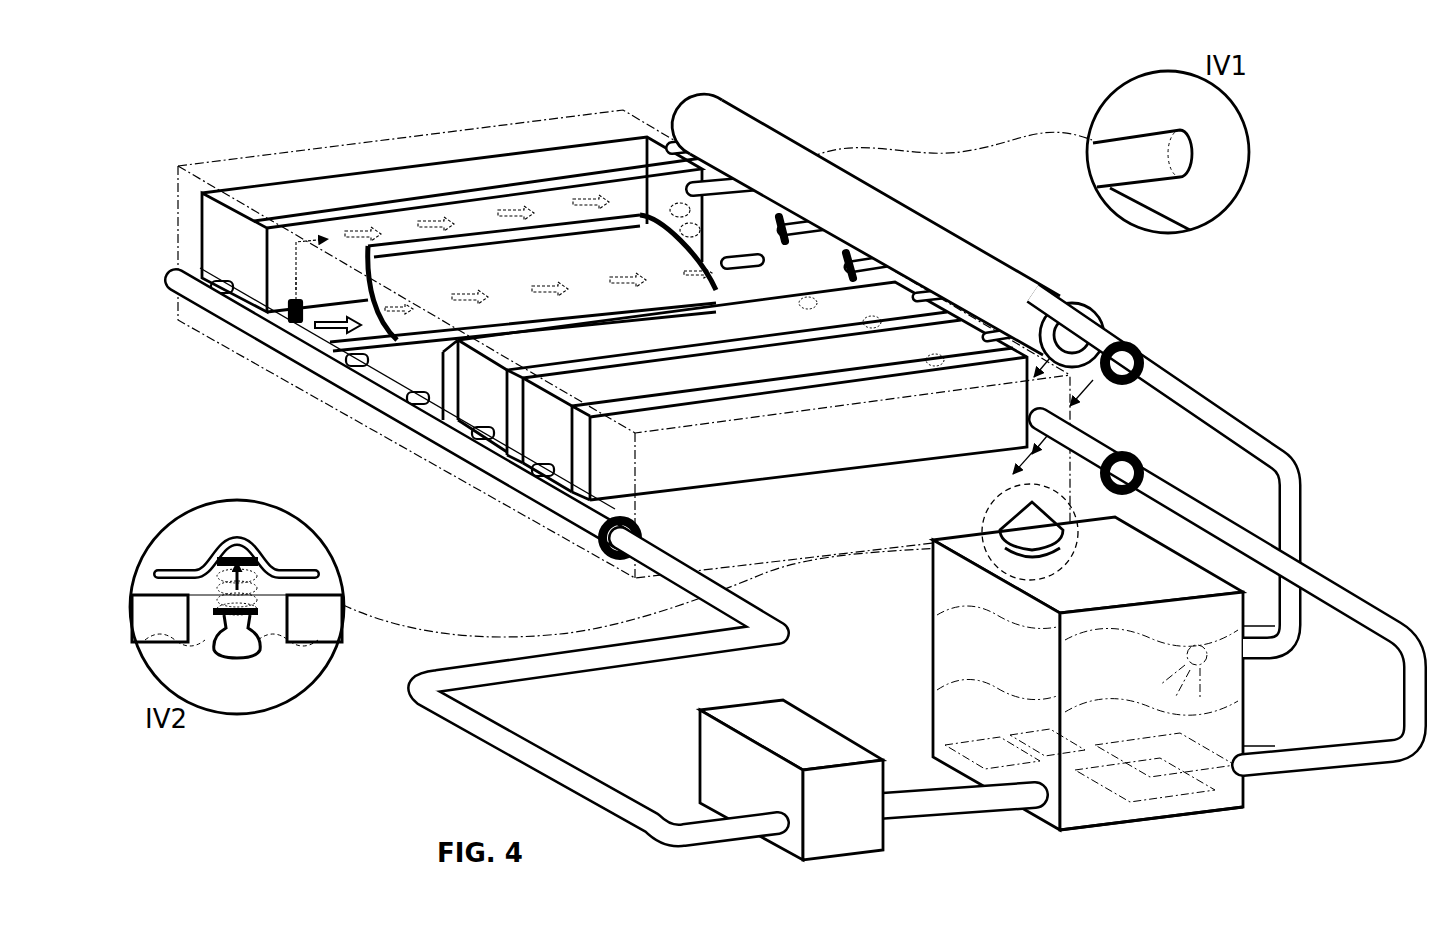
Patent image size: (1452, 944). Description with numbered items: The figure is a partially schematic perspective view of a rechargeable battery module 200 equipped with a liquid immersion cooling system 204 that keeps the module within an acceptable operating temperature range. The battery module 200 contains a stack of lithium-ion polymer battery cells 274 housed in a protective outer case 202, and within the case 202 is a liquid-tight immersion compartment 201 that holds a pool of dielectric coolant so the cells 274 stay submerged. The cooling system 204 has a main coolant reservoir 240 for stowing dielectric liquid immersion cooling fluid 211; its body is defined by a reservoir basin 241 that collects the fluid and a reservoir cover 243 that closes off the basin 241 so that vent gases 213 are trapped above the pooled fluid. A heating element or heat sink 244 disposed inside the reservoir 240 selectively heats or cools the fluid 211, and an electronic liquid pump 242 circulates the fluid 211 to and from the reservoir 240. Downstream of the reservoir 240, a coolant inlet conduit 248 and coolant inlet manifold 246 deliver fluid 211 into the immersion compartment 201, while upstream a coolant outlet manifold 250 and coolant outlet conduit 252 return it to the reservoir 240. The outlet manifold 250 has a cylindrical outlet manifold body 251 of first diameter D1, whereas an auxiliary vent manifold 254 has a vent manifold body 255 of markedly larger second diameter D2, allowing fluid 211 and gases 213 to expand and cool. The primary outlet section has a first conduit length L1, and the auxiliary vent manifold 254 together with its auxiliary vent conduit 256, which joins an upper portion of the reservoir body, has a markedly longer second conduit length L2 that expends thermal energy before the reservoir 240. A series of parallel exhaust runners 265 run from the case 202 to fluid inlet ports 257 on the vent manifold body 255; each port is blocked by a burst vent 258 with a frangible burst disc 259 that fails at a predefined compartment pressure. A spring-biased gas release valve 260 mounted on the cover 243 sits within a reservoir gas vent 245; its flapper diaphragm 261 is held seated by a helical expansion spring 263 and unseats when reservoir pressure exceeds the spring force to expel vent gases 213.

The rechargeable battery module 200 is at (208, 70).
The liquid-tight immersion compartment 201 is at (583, 123).
The protective outer case 202 is at (235, 162).
The liquid immersion cooling system 204 is at (1290, 320).
The dielectric liquid immersion cooling fluid 211 is at (1246, 790).
The vent gases 213 is at (958, 612).
The main coolant reservoir 240 is at (1224, 820).
The reservoir basin 241 is at (935, 720).
The electronic liquid pump 242 is at (855, 838).
The reservoir cover 243 is at (152, 592).
The heating element or heat sink 244 is at (1160, 820).
The reservoir gas vent 245 is at (282, 618).
The coolant inlet manifold 246 is at (305, 352).
The coolant inlet conduit 248 is at (440, 718).
The coolant outlet manifold 250 is at (1100, 433).
The outlet manifold body 251 is at (1110, 412).
The coolant outlet conduit 252 is at (1355, 605).
The auxiliary vent manifold 254 is at (962, 220).
The vent manifold body 255 is at (993, 283).
The auxiliary vent conduit 256 is at (1268, 440).
The fluid inlet port 257 is at (1195, 165).
The burst vent 258 is at (1102, 108).
The frangible burst disc 259 is at (1160, 148).
The gas release valve 260 is at (175, 542).
The flapper diaphragm 261 is at (208, 560).
The helical expansion spring 263 is at (262, 584).
The exhaust runner 265 is at (767, 167).
The lithium-ion polymer battery cells 274 is at (217, 255).
The first diameter D1 is at (1093, 380).
The second diameter D2 is at (1100, 300).
The first conduit length L1 is at (1152, 469).
The second conduit length L2 is at (1123, 337).